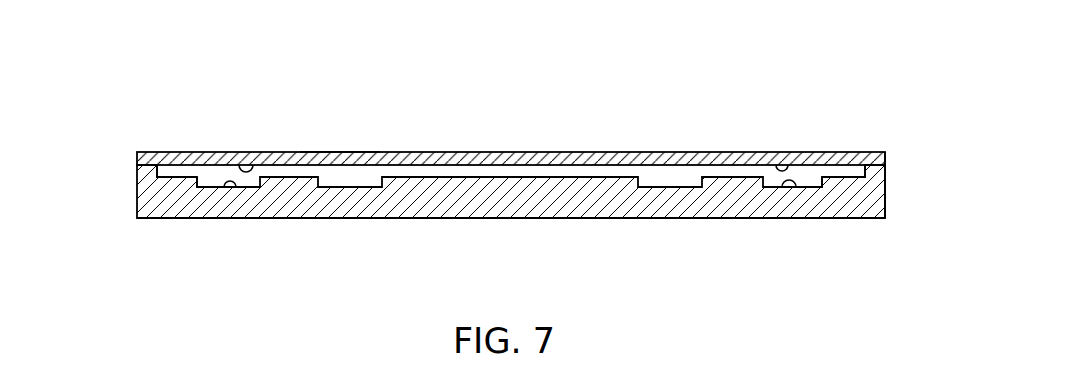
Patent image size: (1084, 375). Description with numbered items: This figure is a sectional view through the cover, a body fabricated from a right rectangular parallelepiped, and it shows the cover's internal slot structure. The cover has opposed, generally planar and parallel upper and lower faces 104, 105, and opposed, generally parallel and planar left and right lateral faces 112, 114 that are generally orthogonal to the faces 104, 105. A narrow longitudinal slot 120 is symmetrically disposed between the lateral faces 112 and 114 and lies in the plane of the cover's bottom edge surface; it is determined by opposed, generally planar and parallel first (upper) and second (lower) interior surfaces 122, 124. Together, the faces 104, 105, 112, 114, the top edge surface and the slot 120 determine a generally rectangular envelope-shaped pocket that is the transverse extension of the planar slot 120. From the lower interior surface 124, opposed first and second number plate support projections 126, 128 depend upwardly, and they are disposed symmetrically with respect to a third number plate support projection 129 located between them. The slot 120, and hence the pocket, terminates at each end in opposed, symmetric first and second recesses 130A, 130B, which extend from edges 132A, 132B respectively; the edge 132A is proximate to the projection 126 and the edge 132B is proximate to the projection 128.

The first (upper) planar face 104 is at (450, 152).
The second (lower) planar face 105 is at (485, 218).
The second (left) lateral face 112 is at (137, 192).
The third (right) lateral face 114 is at (886, 173).
The longitudinal slot 120 is at (341, 163).
The first (upper) interior surface 122 is at (238, 163).
The second (lower) interior surface 124 is at (228, 187).
The first number plate support projection 126 is at (283, 177).
The second number plate support projection 128 is at (726, 178).
The third number plate support projection 129 is at (503, 177).
The first recess 130A is at (188, 168).
The second recess 130B is at (838, 172).
The first edge 132A is at (204, 186).
The second edge 132B is at (826, 180).